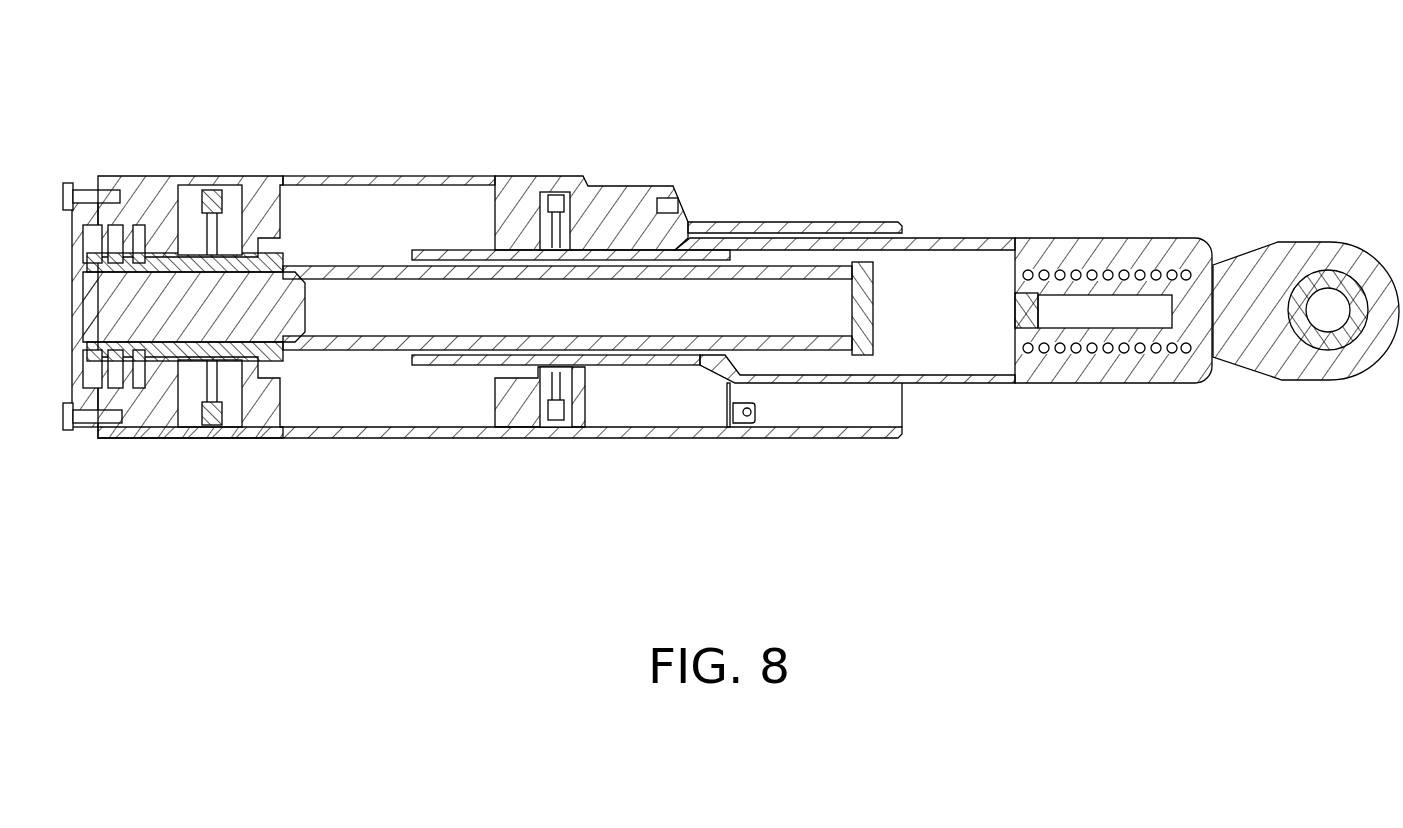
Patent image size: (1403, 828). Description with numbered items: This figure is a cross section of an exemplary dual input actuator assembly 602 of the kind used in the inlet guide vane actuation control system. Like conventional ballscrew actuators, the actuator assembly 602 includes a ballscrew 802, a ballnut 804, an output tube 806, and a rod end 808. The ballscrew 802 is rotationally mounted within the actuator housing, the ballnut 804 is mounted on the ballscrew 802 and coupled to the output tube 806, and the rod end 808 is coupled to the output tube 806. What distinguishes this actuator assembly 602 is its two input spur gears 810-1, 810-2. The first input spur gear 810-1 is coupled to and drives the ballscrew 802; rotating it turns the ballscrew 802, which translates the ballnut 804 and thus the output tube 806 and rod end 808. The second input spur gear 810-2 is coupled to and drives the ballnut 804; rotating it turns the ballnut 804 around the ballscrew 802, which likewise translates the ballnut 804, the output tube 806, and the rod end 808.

The actuator assembly 602 is at (482, 250).
The ballscrew 802 is at (358, 273).
The ballnut 804 is at (622, 255).
The output tube 806 is at (1095, 373).
The rod end 808 is at (1313, 242).
The first input spur gear 810-1 is at (210, 193).
The second input spur gear 810-2 is at (499, 449).